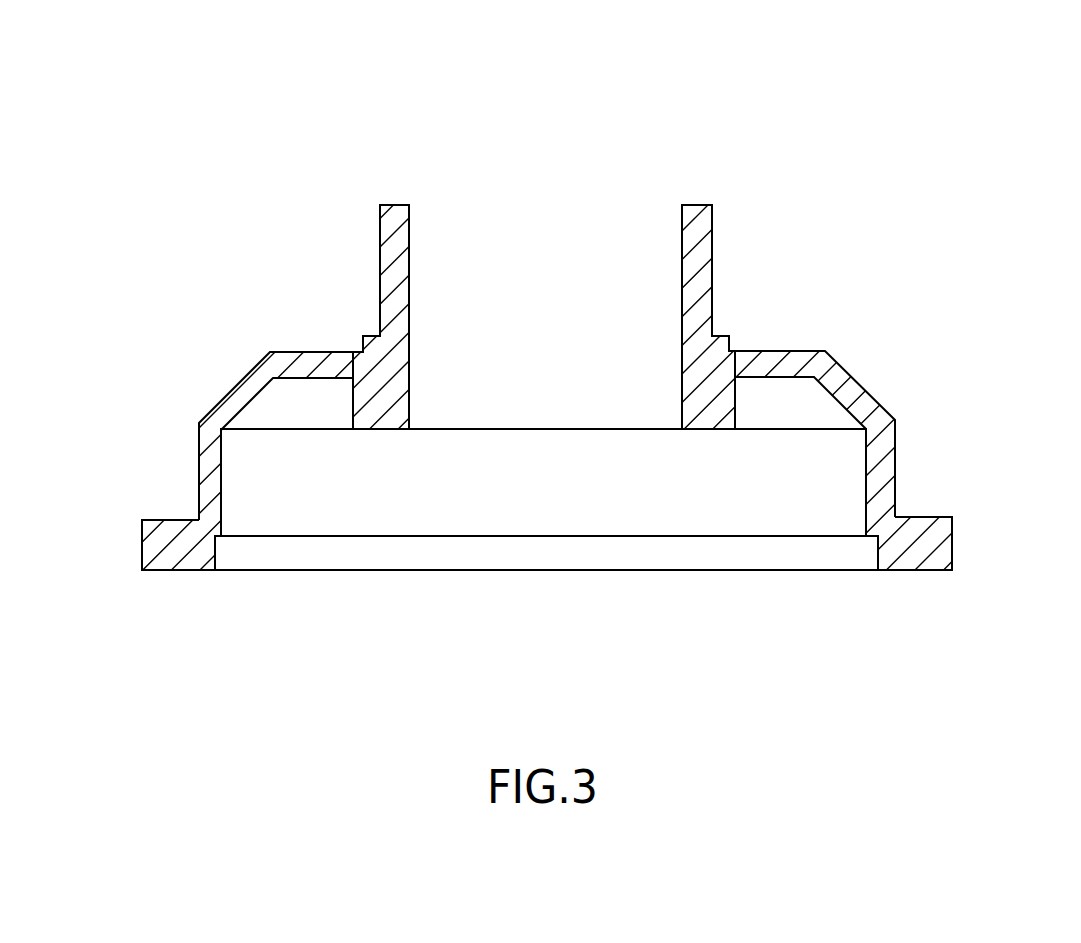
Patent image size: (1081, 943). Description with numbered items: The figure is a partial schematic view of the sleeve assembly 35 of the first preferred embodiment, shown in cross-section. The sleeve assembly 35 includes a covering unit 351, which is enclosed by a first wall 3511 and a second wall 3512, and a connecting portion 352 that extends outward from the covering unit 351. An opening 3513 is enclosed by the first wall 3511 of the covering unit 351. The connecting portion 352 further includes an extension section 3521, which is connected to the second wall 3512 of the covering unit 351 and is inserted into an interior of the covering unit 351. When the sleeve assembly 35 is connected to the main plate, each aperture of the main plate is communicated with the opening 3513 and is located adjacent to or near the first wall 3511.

The sleeve assembly 35 is at (290, 148).
The covering unit 351 is at (870, 372).
The first wall 3511 is at (932, 528).
The second wall 3512 is at (775, 358).
The opening 3513 is at (745, 563).
The connecting portion 352 is at (718, 212).
The extension section 3521 is at (393, 283).